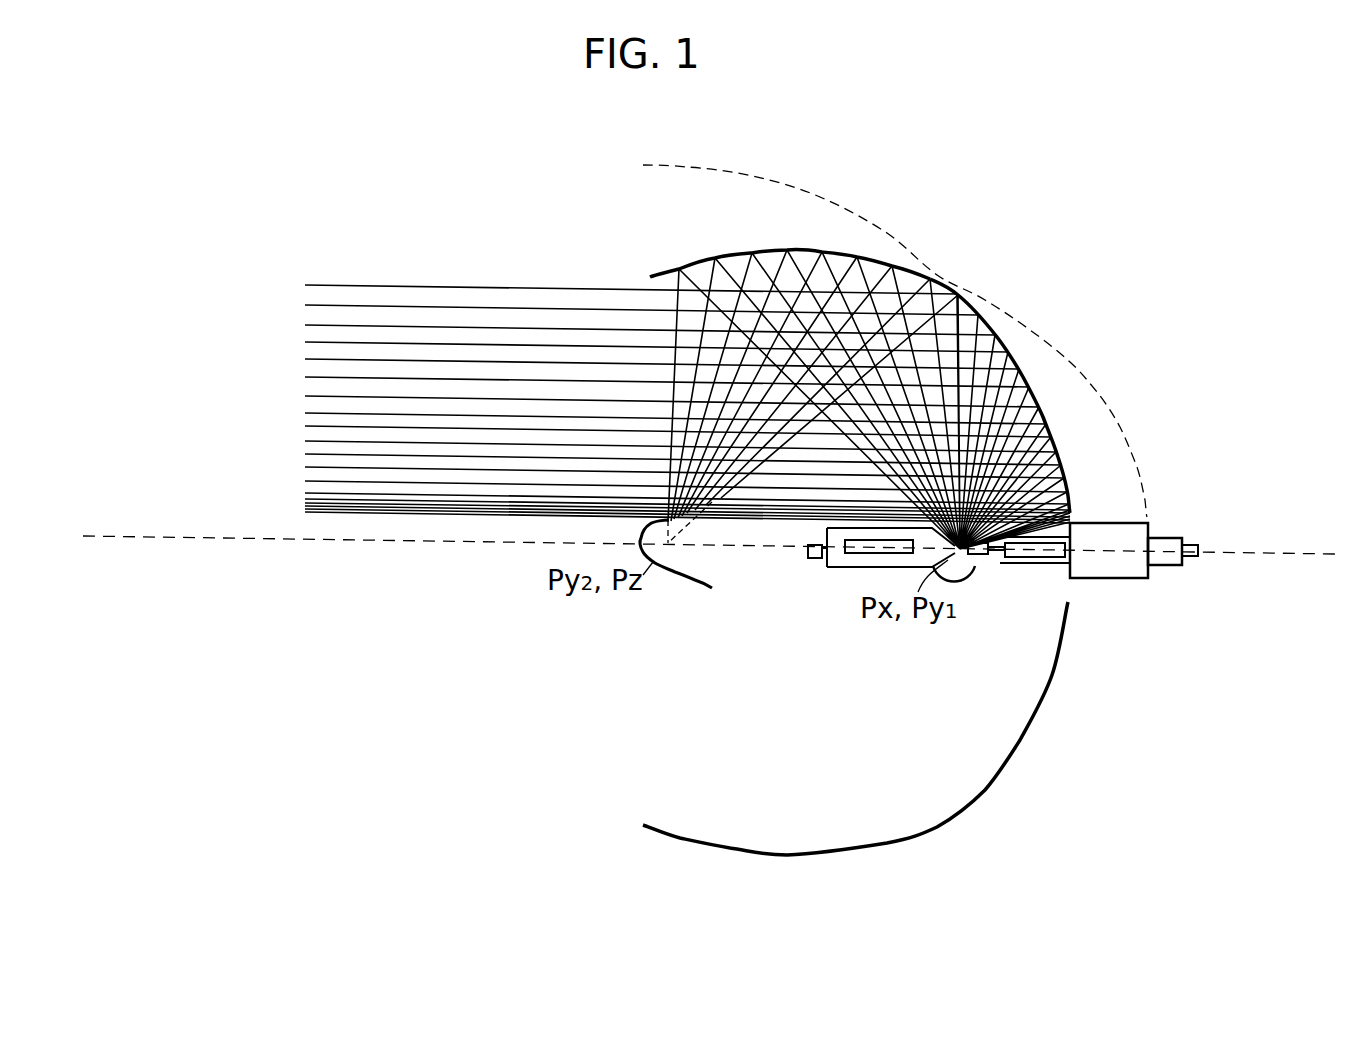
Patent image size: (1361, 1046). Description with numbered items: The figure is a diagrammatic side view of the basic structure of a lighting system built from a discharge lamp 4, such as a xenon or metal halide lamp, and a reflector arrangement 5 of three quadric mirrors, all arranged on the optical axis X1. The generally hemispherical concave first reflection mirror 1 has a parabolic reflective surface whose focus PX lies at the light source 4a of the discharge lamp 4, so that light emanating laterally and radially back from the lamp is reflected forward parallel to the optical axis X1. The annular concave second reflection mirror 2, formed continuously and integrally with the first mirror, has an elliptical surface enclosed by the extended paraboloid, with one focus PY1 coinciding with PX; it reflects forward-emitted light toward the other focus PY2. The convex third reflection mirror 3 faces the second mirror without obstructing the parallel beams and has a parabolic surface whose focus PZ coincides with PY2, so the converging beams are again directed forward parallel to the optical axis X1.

The concave first reflection mirror 1 is at (1024, 365).
The annular concave second reflection mirror 2 is at (732, 256).
The convex third reflection mirror 3 is at (700, 584).
The discharge lamp 4 is at (1123, 580).
The light source 4a is at (974, 557).
The reflector arrangement 5 is at (984, 296).
The optical axis X1 is at (1277, 551).